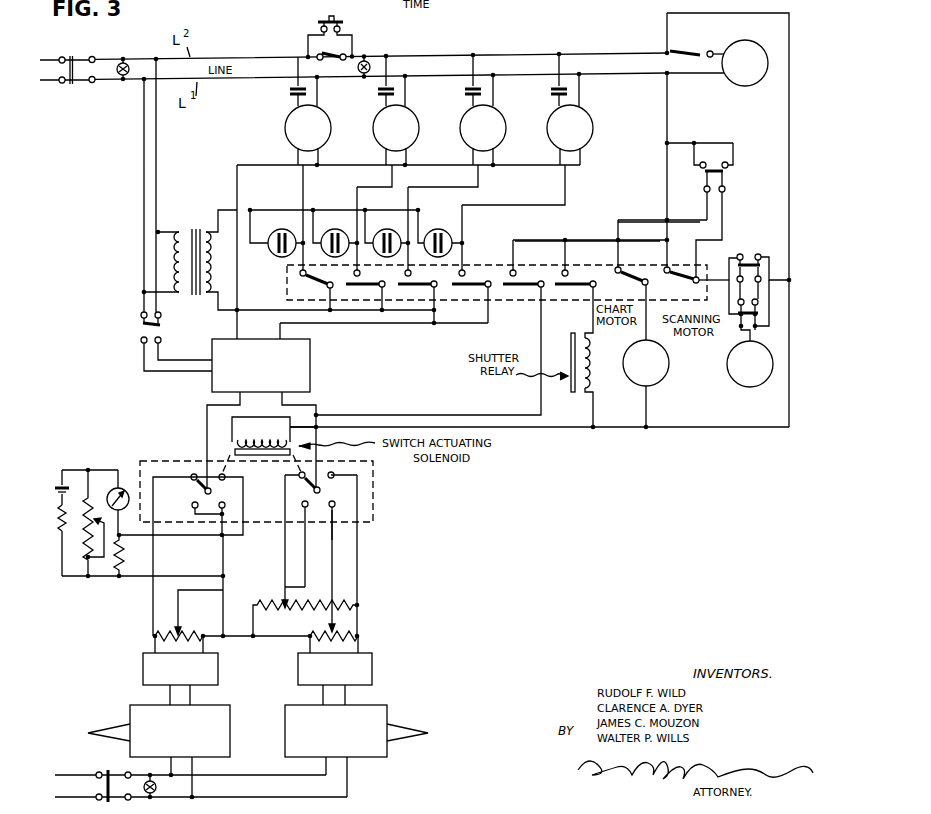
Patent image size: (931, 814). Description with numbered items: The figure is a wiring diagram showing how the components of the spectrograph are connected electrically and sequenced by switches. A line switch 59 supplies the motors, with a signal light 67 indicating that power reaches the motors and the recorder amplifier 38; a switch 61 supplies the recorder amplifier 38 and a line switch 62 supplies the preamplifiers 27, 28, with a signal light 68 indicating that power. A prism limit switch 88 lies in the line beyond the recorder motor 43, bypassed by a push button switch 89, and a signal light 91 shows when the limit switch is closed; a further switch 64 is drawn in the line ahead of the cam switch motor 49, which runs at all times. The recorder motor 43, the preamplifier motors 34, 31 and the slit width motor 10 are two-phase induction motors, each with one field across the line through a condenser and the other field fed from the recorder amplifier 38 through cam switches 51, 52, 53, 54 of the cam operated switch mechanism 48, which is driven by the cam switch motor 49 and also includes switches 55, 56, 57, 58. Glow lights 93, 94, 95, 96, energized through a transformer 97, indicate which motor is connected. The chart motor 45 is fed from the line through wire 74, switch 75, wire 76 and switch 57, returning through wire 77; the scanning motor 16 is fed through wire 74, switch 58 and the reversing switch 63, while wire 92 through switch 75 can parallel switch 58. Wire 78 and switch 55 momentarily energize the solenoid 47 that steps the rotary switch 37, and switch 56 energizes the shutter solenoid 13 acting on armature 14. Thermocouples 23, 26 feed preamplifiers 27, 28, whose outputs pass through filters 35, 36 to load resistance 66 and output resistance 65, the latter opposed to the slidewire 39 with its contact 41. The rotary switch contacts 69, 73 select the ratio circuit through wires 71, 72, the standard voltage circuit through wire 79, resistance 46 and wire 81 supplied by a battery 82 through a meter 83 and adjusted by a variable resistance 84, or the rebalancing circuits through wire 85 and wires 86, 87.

The line switch 59 is at (79, 58).
The signal light 67 is at (125, 63).
The limit switch 88 is at (315, 54).
The push button switch 89 is at (318, 21).
The signal light 91 is at (366, 60).
The recorder motor 43 is at (286, 124).
The preamplifier motor 34 is at (374, 128).
The preamplifier motor 31 is at (461, 128).
The slit width motor 10 is at (594, 130).
The switch 64 is at (695, 52).
The cam switch motor 49 is at (728, 74).
The wire 74 is at (667, 160).
The switch 75 is at (728, 178).
The wire 92 is at (723, 212).
The wire 76 is at (650, 220).
The wire 78 is at (545, 240).
The reversing switch 63 is at (742, 255).
The transformer 97 is at (192, 230).
The glow light 93 is at (282, 229).
The glow light 94 is at (338, 229).
The glow light 95 is at (391, 229).
The glow light 96 is at (444, 220).
The cam operated switch mechanism 48 is at (287, 283).
The switch 51 is at (314, 283).
The switch 52 is at (359, 276).
The switch 53 is at (410, 276).
The switch 54 is at (464, 276).
The switch 55 is at (516, 276).
The switch 56 is at (567, 276).
The switch 57 is at (630, 283).
The switch 58 is at (684, 283).
The switch 61 is at (142, 321).
The recorder amplifier 38 is at (310, 357).
The armature 14 is at (571, 352).
The solenoid 13 is at (588, 370).
The chart motor 45 is at (636, 346).
The scanning motor 16 is at (728, 358).
The wire 77 is at (609, 429).
The solenoid 47 is at (268, 436).
The rotary switch 37 is at (373, 490).
The contact 69 is at (195, 492).
The wire 79 is at (243, 497).
The contact 73 is at (312, 490).
The battery 82 is at (56, 486).
The meter 83 is at (122, 487).
The variable resistance 84 is at (84, 523).
The source of standard voltage 46 is at (133, 554).
The wire 71 is at (153, 549).
The wire 85 is at (223, 549).
The wire 72 is at (285, 566).
The wire 86 is at (333, 551).
The wire 81 is at (357, 552).
The slidewire 39 is at (309, 600).
The contact 41 is at (282, 597).
The wire 87 is at (211, 601).
The output resistance 65 is at (190, 636).
The load resistance 66 is at (324, 628).
The filter 36 is at (218, 663).
The filter 35 is at (372, 663).
The preamplifier 28 is at (230, 733).
The preamplifier 27 is at (380, 743).
The thermocouple 26 is at (105, 720).
The thermocouple 23 is at (423, 720).
The line switch 62 is at (115, 772).
The signal light 68 is at (157, 789).